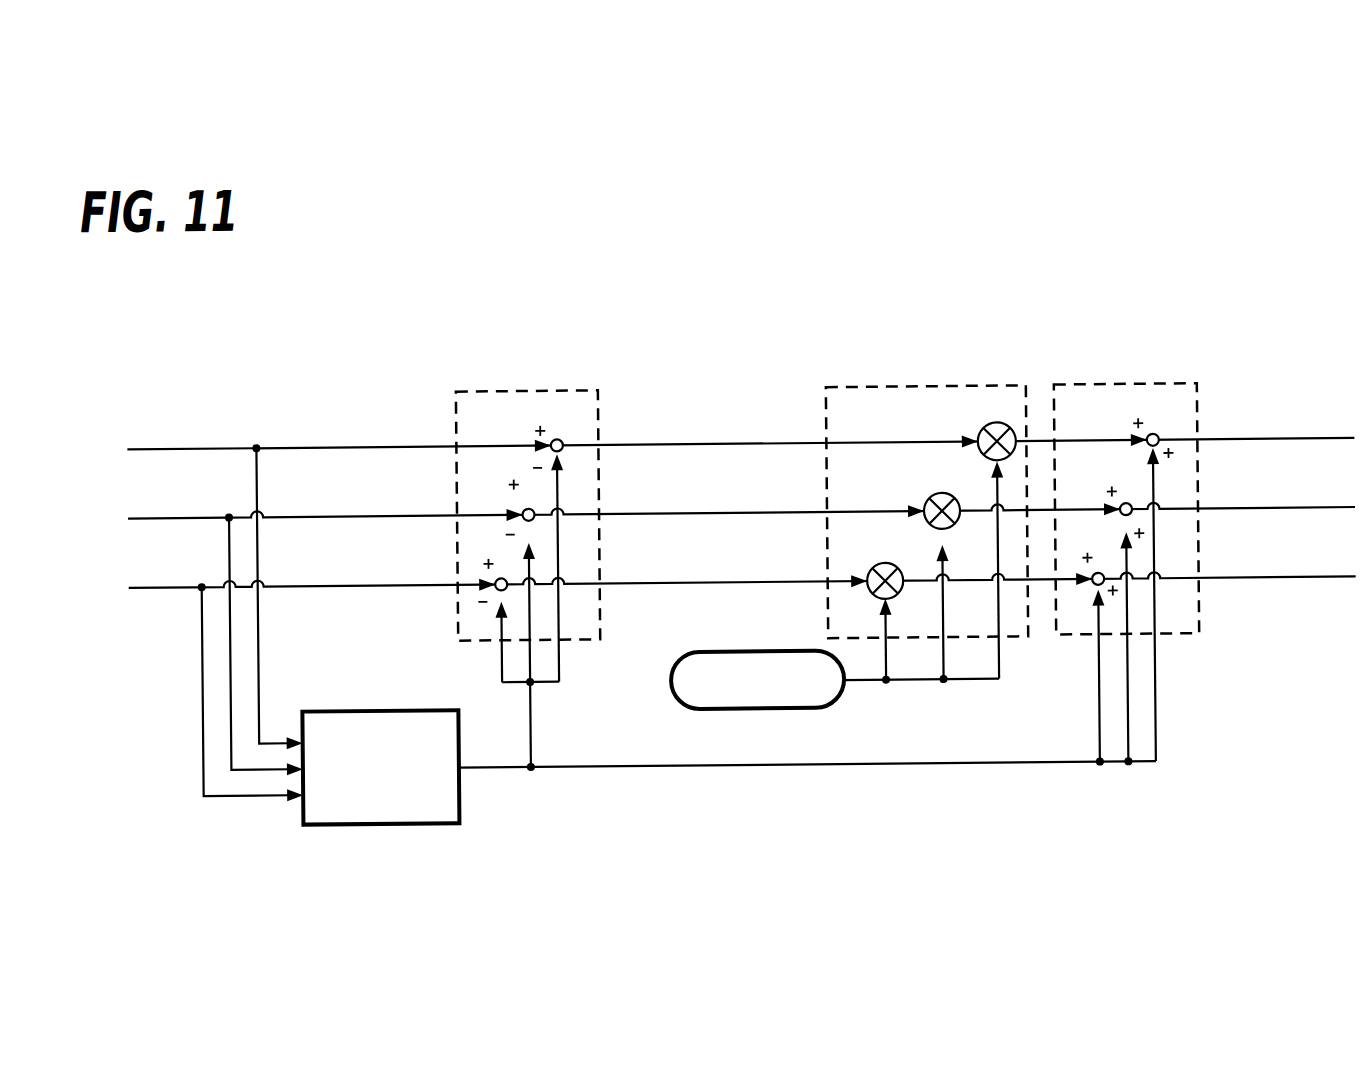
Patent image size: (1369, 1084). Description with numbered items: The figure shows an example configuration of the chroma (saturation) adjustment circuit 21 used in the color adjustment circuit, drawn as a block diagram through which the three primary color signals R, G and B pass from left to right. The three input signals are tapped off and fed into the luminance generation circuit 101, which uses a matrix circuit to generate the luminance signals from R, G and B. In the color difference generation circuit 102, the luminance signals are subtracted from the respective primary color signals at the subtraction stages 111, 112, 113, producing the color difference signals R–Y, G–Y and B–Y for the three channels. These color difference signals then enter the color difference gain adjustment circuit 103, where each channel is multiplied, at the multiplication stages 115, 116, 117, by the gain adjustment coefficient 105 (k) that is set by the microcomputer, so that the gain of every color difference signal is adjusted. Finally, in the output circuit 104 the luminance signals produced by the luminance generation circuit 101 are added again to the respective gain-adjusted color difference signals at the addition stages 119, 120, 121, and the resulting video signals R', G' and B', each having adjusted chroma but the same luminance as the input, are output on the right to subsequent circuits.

The color correction circuit 21 is at (1213, 274).
The luminance generation circuit 101 is at (393, 708).
The color difference generation circuit 102 is at (500, 389).
The color difference gain adjustment circuit 103 is at (884, 388).
The output circuit 104 is at (1100, 388).
The gain adjustment coefficient 105 is at (670, 681).
The subtractor for R 111 is at (564, 442).
The subtractor for G 112 is at (530, 510).
The subtractor for B 113 is at (507, 580).
The multiplier for R 115 is at (998, 425).
The multiplier for G 116 is at (934, 495).
The multiplier for B 117 is at (869, 570).
The adder for R 119 is at (1161, 440).
The adder for G 120 is at (1130, 508).
The adder for B 121 is at (1102, 576).